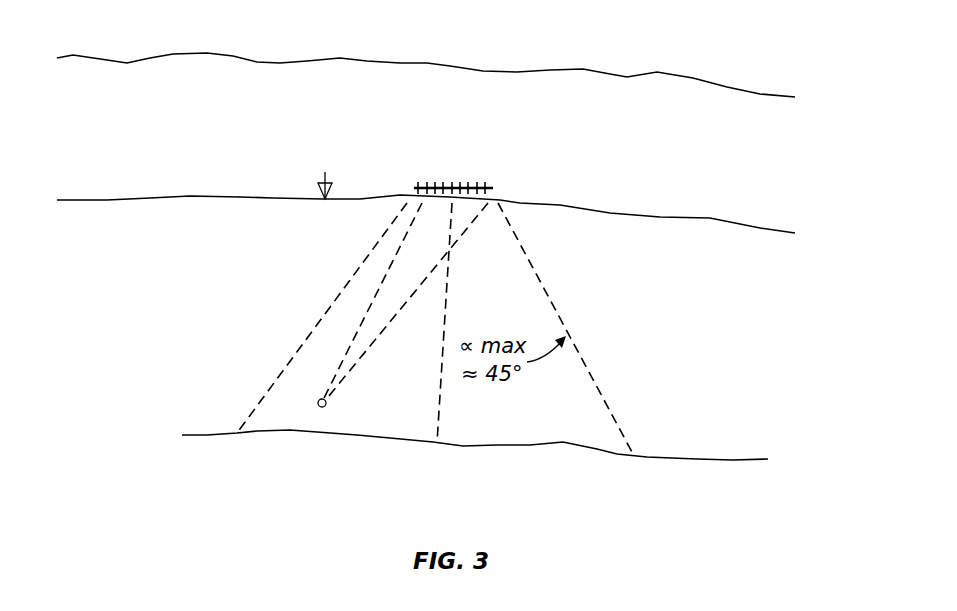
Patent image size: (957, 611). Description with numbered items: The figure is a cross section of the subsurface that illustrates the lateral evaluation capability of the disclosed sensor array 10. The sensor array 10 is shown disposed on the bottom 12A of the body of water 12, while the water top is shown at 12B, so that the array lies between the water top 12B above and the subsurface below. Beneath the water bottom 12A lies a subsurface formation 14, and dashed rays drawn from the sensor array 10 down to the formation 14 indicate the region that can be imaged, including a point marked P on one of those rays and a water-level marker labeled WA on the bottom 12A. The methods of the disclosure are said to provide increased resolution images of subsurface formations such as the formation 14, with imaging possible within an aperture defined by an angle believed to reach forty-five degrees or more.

The sensor array 10 is at (459, 165).
The body of water 12 is at (164, 132).
The bottom of the body of water 12A is at (193, 196).
The water top 12B is at (427, 63).
The subsurface formation 14 is at (205, 437).
The subsurface point P is at (322, 407).
The water level symbol WA is at (325, 175).